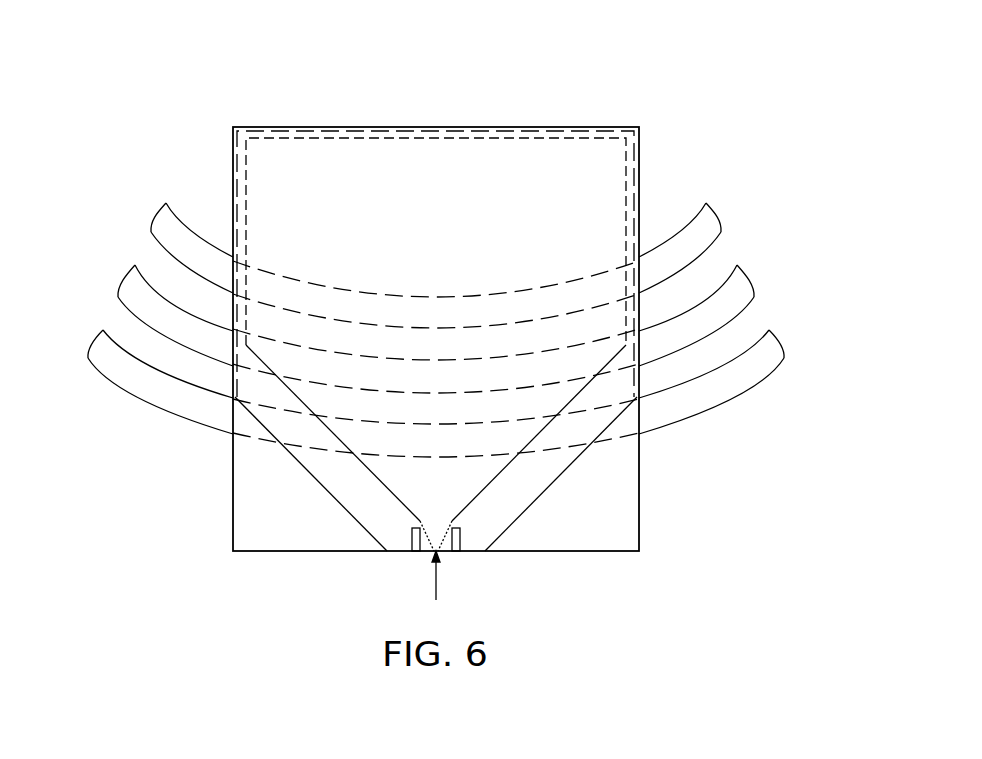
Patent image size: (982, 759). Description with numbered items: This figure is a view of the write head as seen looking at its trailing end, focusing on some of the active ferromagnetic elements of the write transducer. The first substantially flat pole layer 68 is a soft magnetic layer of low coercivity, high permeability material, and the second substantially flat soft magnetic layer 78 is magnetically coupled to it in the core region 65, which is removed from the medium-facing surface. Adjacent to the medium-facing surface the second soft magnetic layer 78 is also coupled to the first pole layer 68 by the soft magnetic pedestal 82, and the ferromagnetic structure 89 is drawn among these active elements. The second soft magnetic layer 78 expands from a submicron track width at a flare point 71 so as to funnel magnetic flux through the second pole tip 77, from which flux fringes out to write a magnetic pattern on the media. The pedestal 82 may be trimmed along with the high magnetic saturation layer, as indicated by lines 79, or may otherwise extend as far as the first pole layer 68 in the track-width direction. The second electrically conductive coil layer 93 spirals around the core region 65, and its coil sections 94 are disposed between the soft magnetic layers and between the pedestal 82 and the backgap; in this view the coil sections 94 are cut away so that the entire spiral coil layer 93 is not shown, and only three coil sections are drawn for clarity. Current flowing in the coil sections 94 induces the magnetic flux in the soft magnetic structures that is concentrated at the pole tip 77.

The core region 65 is at (233, 118).
The first substantially flat pole layer 68 is at (561, 473).
The flare point 71 is at (446, 551).
The second pole tip 77 is at (436, 589).
The second substantially flat soft magnetic layer 78 is at (412, 530).
The lines 79 is at (415, 552).
The soft magnetic pedestal 82 is at (460, 538).
The ferromagnetic structure 89 is at (236, 488).
The second electrically conductive coil layer 93 is at (152, 196).
The coil sections 94 is at (722, 235).